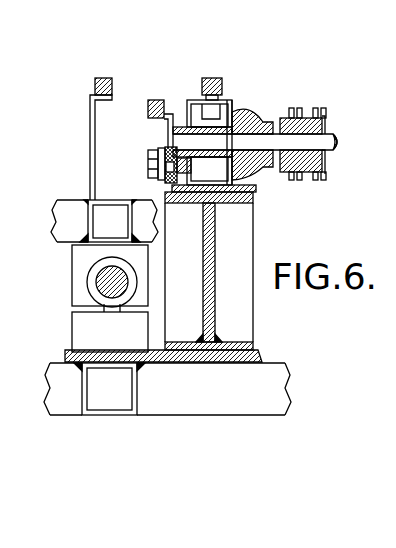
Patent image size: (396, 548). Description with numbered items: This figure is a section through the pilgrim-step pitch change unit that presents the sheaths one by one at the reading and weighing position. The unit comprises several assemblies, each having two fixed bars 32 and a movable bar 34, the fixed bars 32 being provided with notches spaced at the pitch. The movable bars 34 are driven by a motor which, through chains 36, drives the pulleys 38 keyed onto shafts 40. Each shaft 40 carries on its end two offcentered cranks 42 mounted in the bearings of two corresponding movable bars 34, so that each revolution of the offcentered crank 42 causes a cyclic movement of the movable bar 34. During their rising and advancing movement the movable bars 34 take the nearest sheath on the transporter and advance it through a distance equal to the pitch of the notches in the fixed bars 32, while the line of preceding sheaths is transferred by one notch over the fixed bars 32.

The fixed bar 32 is at (93, 82).
The movable bar 34 is at (157, 100).
The chain 36 is at (325, 112).
The pulley 38 is at (300, 118).
The shaft 40 is at (252, 132).
The offcentered crank 42 is at (150, 160).